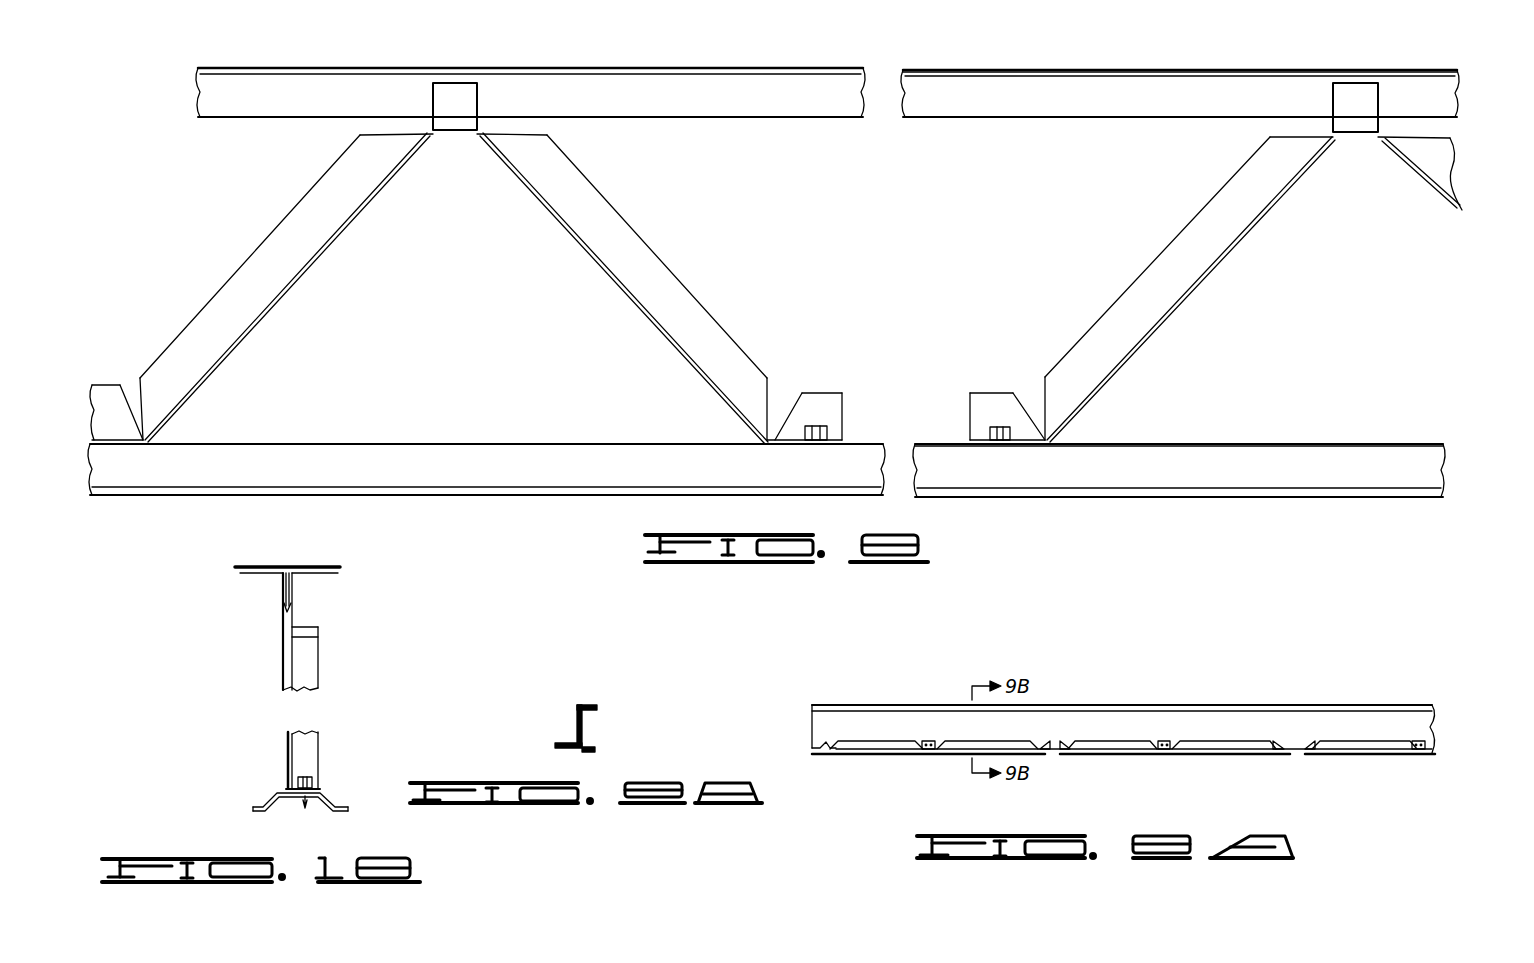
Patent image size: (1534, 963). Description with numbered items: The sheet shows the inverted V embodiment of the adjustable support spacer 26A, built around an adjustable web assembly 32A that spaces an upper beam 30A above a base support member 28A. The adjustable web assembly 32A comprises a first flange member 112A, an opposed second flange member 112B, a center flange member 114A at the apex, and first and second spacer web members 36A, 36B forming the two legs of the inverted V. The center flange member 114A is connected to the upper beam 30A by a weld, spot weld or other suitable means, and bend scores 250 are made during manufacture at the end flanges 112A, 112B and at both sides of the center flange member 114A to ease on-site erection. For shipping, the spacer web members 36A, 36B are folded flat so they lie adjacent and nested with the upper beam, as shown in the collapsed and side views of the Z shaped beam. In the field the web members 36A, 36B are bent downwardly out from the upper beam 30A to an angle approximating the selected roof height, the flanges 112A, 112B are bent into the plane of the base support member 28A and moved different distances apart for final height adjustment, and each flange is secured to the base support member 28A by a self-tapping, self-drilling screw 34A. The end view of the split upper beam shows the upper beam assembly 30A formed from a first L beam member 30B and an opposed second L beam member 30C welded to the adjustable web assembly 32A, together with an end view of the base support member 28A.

In FIG. 8, the adjustable support spacer 26A is at (1072, 57).
In FIG. 8, the base support member 28A is at (512, 443).
In FIG. 16, the base support member 28A is at (335, 796).
In FIG. 8, the upper beam 30A is at (710, 82).
In FIG. 16, the first L beam member 30B is at (260, 568).
In FIG. 9A, the first L beam member 30B is at (588, 722).
In FIG. 9B, the first L beam member 30B is at (1191, 724).
In FIG. 16, the second L beam member 30C is at (322, 575).
In FIG. 8, the adjustable web assembly 32A is at (797, 288).
In FIG. 16, the adjustable web assembly 32A is at (297, 680).
In FIG. 8, the self-tapping, self-drilling screw 34A is at (818, 428).
In FIG. 16, the self-tapping, self-drilling screw 34A is at (305, 777).
In FIG. 8, the first spacer web member 36A is at (620, 285).
In FIG. 16, the first spacer web member 36A is at (322, 662).
In FIG. 9A, the first spacer web member 36A is at (596, 750).
In FIG. 9B, the first spacer web member 36A is at (1205, 753).
In FIG. 8, the second spacer web member 36B is at (290, 286).
In FIG. 8, the first flange member 112A is at (120, 448).
In FIG. 9B, the first flange member 112A is at (1063, 742).
In FIG. 8, the second flange member 112B is at (795, 443).
In FIG. 9B, the second flange member 112B is at (1283, 745).
In FIG. 8, the center flange member 114A is at (468, 97).
In FIG. 9B, the center flange member 114A is at (1163, 742).
In FIG. 8, the bend scores 250 is at (433, 128).